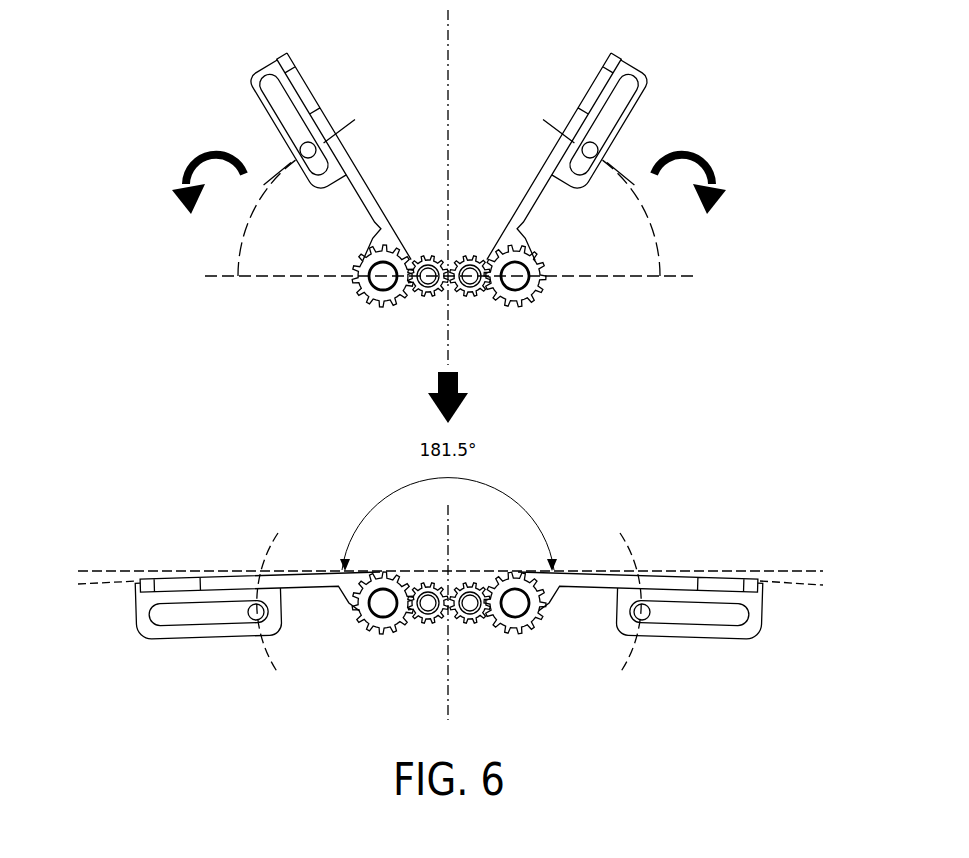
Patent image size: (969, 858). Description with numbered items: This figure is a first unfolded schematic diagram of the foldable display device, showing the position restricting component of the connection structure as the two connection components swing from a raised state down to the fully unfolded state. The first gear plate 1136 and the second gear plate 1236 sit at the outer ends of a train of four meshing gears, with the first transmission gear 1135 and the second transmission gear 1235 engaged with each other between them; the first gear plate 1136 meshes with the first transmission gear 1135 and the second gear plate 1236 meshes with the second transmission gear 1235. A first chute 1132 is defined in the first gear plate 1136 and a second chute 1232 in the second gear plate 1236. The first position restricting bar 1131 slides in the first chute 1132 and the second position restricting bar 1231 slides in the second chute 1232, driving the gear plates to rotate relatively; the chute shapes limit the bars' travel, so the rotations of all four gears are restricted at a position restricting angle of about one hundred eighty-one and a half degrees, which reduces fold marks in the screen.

The first position restricting bar 1131 is at (301, 148).
The first chute 1132 is at (279, 97).
The first transmission gear 1135 is at (421, 296).
The first gear plate 1136 is at (355, 293).
The second position restricting bar 1231 is at (592, 146).
The second chute 1232 is at (633, 90).
The second transmission gear 1235 is at (482, 296).
The second gear plate 1236 is at (541, 289).